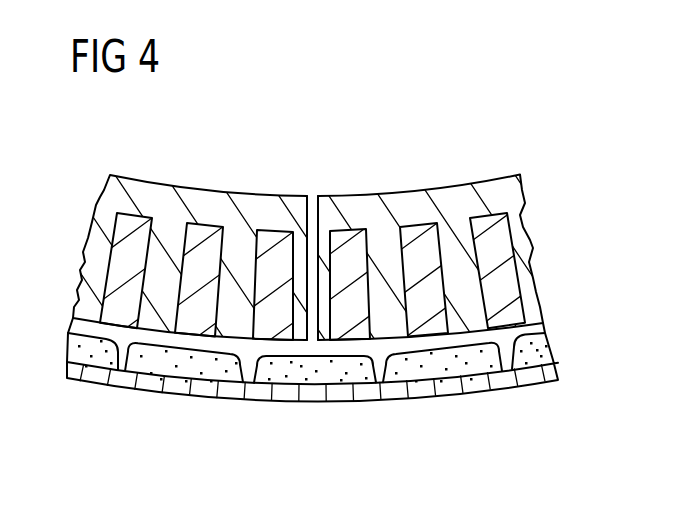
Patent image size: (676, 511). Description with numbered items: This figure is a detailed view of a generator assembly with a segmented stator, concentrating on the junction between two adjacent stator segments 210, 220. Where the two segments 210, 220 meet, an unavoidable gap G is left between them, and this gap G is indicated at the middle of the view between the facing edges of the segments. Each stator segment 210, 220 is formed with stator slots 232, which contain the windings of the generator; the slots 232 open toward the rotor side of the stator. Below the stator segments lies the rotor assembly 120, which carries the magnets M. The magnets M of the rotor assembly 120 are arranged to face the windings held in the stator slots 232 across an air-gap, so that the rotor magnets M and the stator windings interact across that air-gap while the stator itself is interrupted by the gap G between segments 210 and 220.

The stator segment 210 is at (203, 198).
The stator segment 220 is at (412, 200).
The stator slots 232 is at (128, 228).
The gap G is at (321, 174).
The magnets M is at (180, 367).
The rotor assembly 120 is at (312, 395).